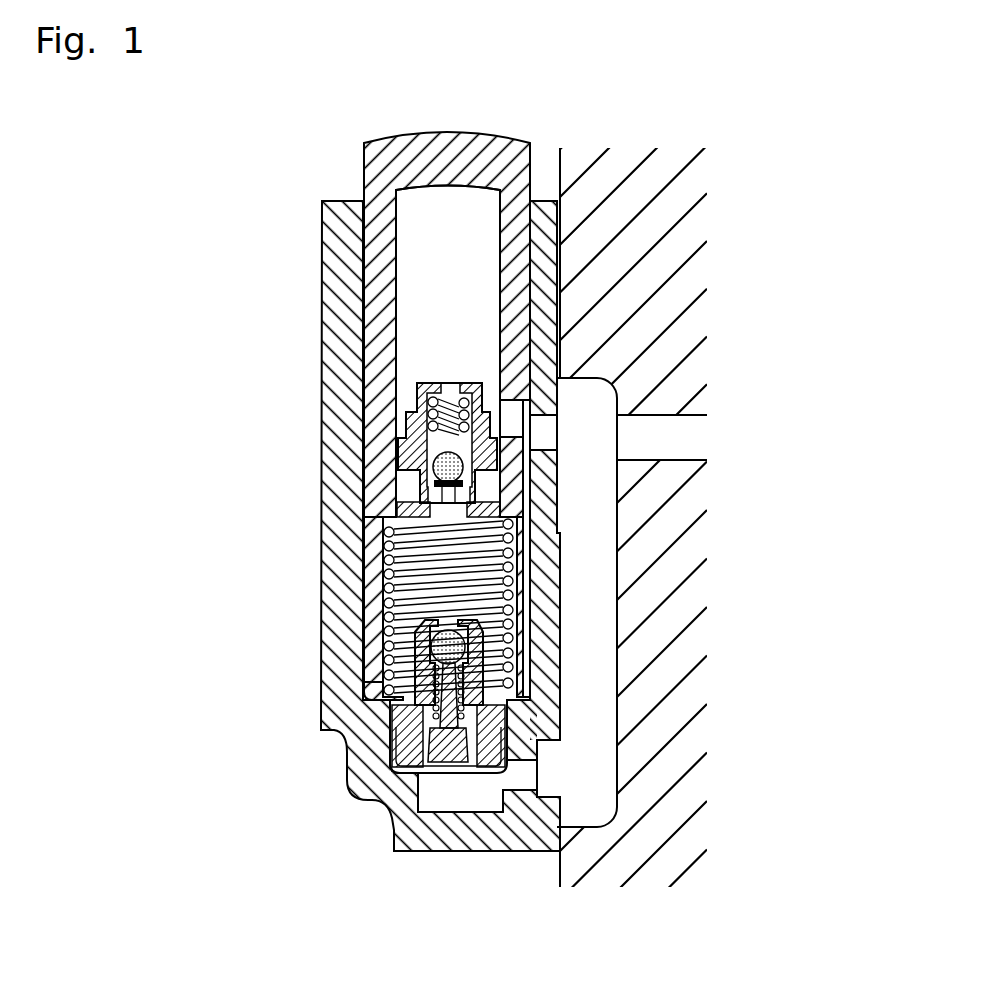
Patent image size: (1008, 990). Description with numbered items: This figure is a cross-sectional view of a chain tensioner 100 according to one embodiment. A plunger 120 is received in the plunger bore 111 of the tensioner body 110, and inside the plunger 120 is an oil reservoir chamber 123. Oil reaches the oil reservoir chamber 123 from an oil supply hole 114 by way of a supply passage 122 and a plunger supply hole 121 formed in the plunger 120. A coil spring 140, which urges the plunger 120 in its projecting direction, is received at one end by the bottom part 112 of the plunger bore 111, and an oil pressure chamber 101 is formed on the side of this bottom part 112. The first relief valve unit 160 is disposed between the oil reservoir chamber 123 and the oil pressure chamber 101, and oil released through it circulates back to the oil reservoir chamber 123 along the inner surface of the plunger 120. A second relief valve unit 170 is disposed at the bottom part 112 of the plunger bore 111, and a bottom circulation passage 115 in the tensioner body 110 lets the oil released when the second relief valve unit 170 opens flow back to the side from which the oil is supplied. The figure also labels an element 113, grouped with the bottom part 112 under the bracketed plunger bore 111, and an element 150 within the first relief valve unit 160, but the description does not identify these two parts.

The chain tensioner 100 is at (185, 170).
The tensioner body 110 is at (322, 397).
The plunger bore 111 is at (205, 582).
The bottom part 112 is at (373, 684).
The sleeve portion 113 is at (378, 590).
The oil supply hole 114 is at (545, 434).
The bottom circulation passage 115 is at (519, 775).
The plunger 120 is at (364, 176).
The plunger supply hole 121 is at (512, 414).
The supply passage 122 is at (528, 450).
The oil reservoir chamber 123 is at (437, 247).
The coil spring 140 is at (386, 549).
The ball valve element 150 is at (404, 473).
The first relief valve unit 160 is at (403, 445).
The second relief valve unit 170 is at (400, 717).
The oil pressure chamber 101 is at (435, 572).